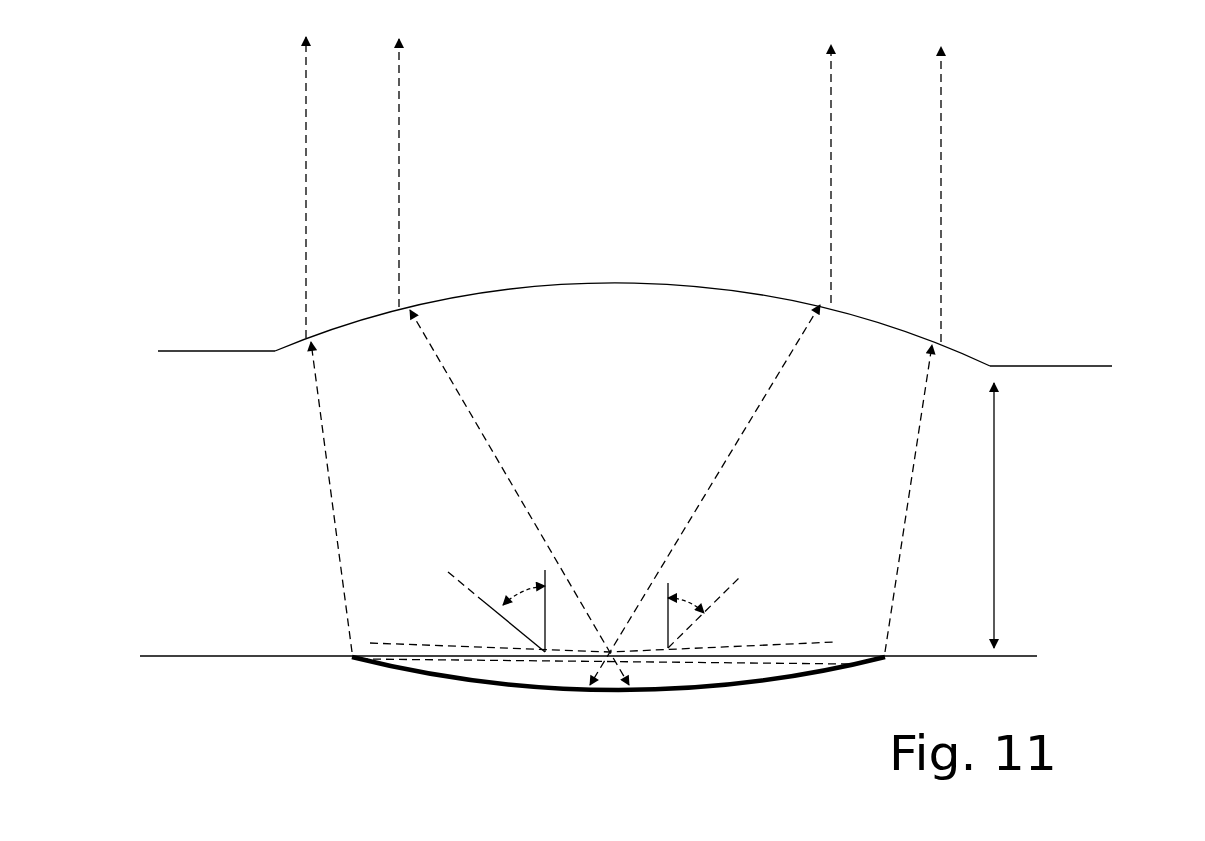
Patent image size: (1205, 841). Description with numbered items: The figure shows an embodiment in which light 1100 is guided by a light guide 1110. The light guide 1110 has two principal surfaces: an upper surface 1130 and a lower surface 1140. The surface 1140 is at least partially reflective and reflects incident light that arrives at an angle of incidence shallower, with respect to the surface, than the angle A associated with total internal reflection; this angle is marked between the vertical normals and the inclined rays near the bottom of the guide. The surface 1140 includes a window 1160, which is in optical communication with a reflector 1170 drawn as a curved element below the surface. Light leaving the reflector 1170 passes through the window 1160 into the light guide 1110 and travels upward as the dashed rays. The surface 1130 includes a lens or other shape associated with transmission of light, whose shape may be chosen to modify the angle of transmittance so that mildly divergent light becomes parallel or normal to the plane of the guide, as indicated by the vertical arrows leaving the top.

The light 1100 is at (200, 480).
The light guide 1110 is at (615, 274).
The surface 1130 is at (552, 281).
The surface 1140 is at (193, 660).
The window 1160 is at (657, 542).
The reflector 1170 is at (535, 691).